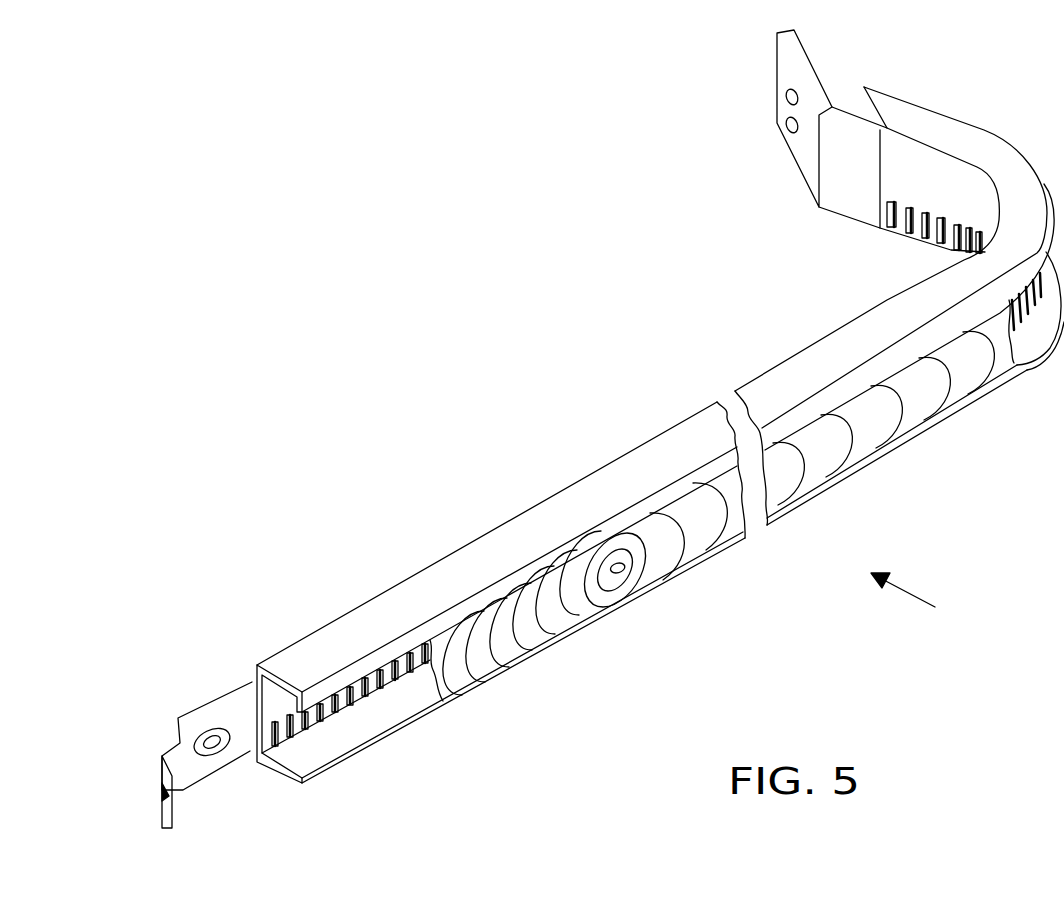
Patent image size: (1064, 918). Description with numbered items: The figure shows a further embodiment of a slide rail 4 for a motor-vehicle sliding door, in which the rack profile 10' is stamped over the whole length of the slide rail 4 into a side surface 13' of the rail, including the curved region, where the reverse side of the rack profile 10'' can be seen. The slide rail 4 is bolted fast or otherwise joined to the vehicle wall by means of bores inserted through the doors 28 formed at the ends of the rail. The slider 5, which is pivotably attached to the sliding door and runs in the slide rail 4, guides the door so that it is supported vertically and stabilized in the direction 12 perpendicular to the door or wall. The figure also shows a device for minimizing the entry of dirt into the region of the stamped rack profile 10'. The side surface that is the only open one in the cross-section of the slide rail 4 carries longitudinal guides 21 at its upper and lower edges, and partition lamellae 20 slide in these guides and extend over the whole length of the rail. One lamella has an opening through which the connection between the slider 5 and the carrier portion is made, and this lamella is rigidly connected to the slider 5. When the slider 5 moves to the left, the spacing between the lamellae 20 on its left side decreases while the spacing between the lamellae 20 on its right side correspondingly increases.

The slide rail 4 is at (458, 567).
The slider 5 is at (618, 572).
The rack profile 10' is at (363, 718).
The reverse side of the rack profile 10'' is at (876, 237).
The direction perpendicular to the sliding door 12 is at (930, 588).
The side surface 13' is at (217, 726).
The partition lamellae 20 is at (700, 528).
The longitudinal guides 21 is at (800, 408).
The doors 28 is at (208, 738).